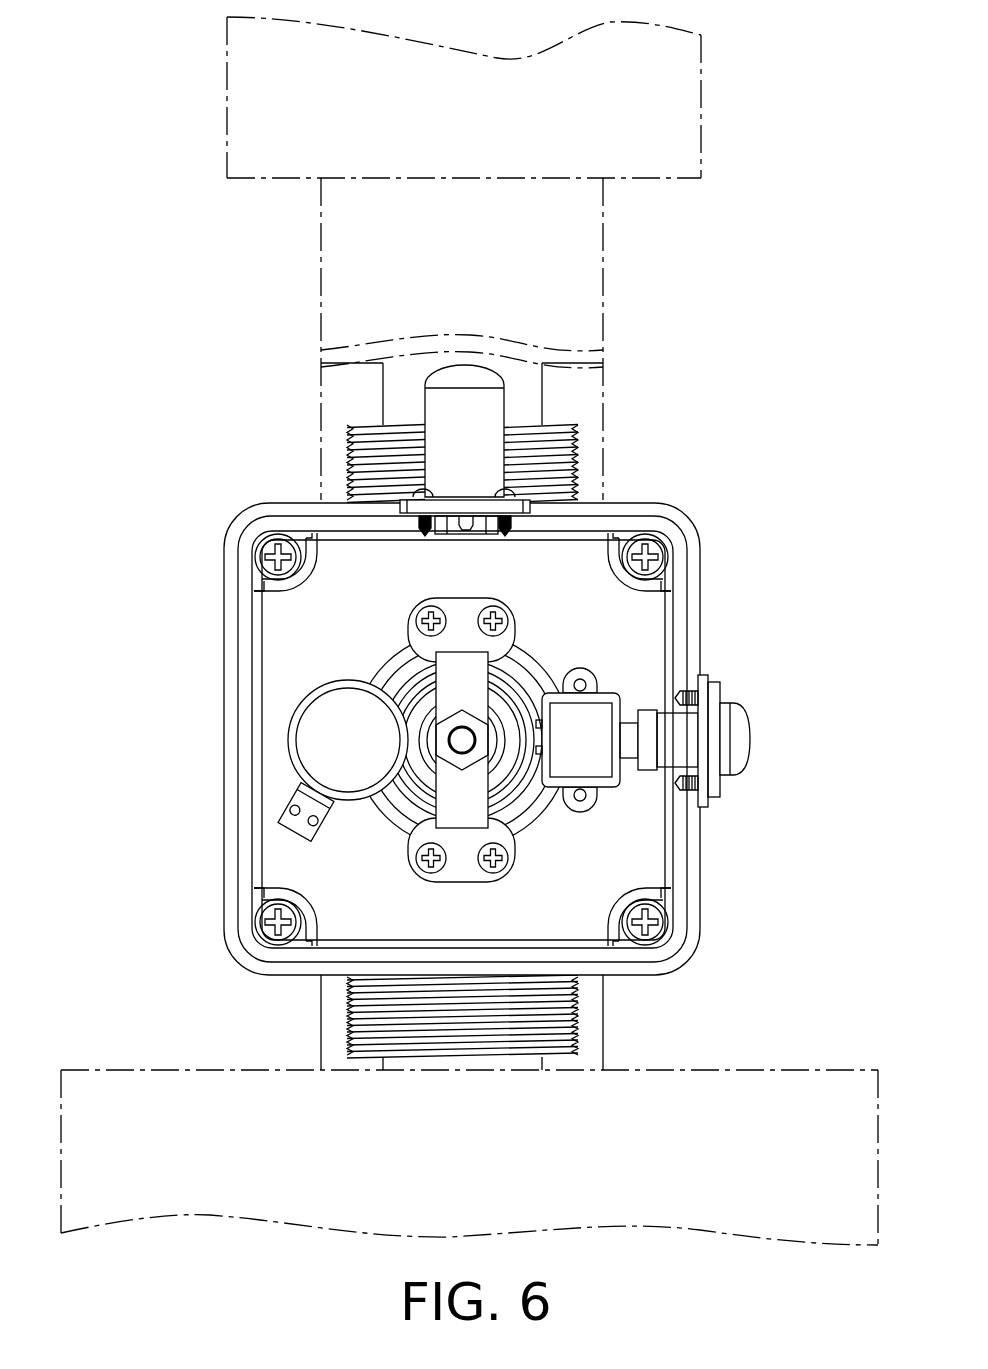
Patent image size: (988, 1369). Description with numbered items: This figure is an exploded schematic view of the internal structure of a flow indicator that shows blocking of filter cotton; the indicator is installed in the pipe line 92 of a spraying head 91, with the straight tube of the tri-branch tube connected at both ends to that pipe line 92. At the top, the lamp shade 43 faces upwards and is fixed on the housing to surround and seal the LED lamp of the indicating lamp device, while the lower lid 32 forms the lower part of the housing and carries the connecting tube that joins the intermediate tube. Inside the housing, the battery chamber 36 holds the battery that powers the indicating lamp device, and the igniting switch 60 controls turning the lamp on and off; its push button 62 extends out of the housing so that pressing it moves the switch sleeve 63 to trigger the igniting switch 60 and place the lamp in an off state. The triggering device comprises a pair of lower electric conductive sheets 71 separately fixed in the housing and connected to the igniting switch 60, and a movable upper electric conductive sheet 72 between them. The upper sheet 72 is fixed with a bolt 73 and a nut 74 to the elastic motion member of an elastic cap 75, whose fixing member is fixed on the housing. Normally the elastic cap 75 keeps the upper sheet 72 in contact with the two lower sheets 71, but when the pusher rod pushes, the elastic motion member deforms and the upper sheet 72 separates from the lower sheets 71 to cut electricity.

The spraying head 91 is at (701, 107).
The pipe line 92 is at (603, 305).
The lamp shade 43 is at (465, 408).
The lower lid 32 is at (700, 607).
The nut 74 is at (483, 722).
The lower electric conductive sheets 71 is at (467, 602).
The movable upper electric conductive sheet 72 is at (468, 803).
The bolt 73 is at (462, 740).
The battery chamber 36 is at (338, 718).
The elastic cap 75 is at (378, 820).
The igniting switch 60 is at (590, 748).
The switch sleeve 63 is at (675, 745).
The push button 62 is at (752, 740).